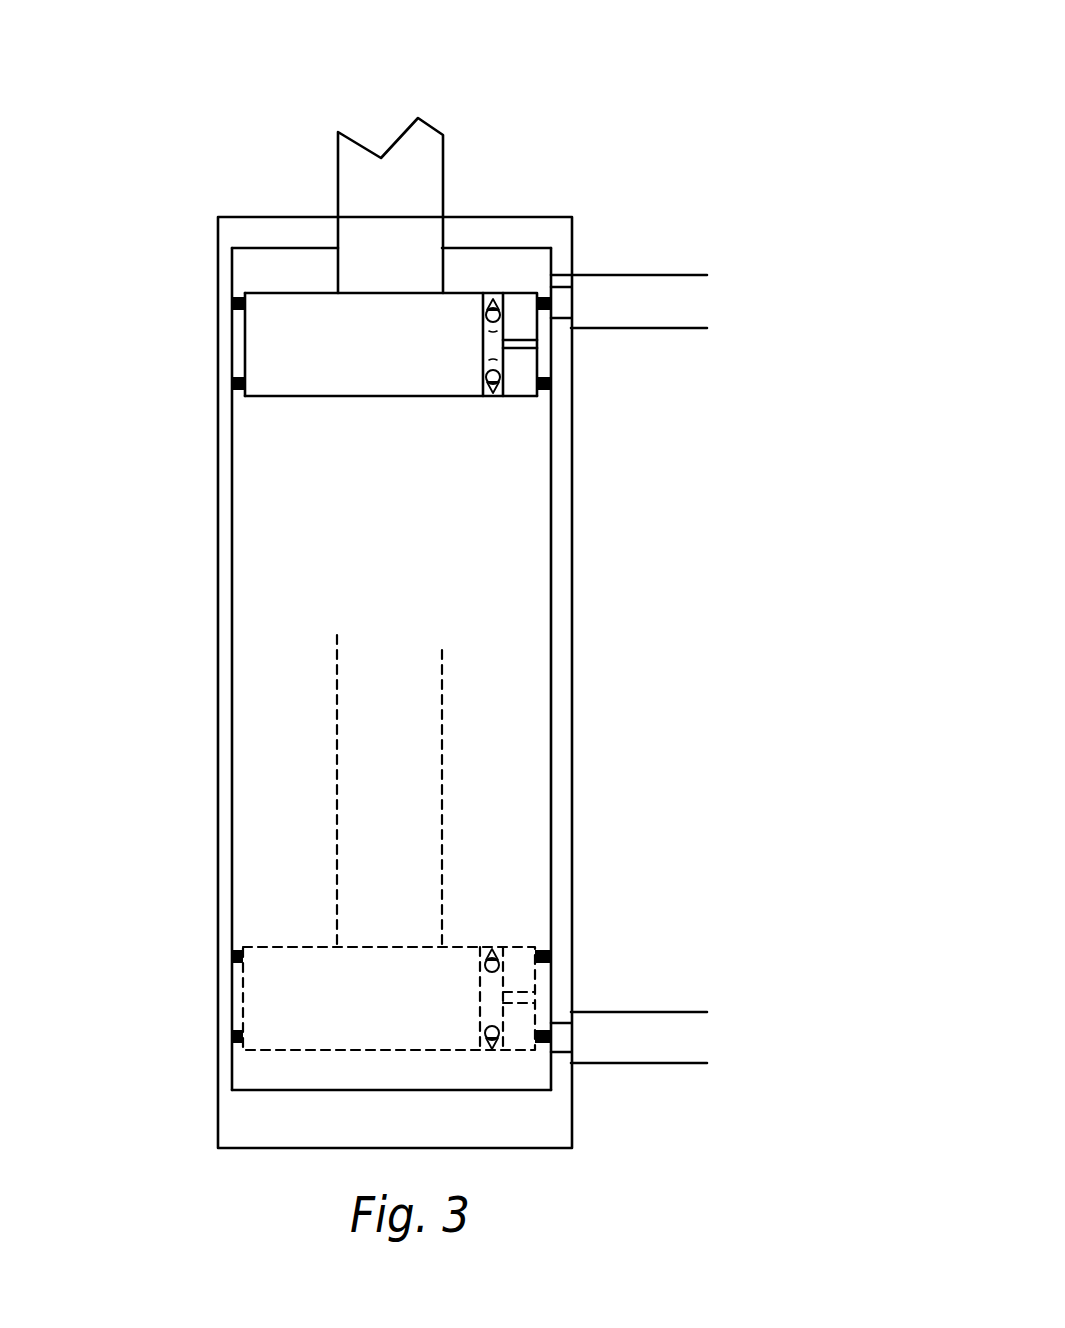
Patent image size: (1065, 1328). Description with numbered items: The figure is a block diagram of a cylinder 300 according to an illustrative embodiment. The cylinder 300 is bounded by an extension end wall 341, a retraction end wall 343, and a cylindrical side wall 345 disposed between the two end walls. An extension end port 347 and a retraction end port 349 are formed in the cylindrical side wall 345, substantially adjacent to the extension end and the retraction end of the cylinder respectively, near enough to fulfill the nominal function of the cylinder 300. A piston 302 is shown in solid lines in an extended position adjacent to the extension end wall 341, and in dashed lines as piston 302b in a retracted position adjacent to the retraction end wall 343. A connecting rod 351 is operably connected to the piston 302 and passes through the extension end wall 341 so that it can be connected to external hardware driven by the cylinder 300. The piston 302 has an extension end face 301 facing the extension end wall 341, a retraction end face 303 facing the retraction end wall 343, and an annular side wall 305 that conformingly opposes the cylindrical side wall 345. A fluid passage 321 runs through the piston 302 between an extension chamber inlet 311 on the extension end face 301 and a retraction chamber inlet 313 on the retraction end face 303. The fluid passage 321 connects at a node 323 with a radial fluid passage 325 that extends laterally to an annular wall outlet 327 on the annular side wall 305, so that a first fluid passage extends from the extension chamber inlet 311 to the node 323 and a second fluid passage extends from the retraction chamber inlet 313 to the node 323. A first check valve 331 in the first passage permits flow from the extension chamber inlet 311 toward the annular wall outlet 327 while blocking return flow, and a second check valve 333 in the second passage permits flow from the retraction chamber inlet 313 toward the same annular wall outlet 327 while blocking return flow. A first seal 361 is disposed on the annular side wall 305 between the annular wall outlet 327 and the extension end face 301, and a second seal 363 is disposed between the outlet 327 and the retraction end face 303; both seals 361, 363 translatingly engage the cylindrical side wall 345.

The cylinder 300 is at (742, 156).
The extension end face 301 is at (282, 328).
The piston 302 is at (250, 285).
The piston in retracted position 302b is at (255, 938).
The retraction end face 303 is at (287, 397).
The annular side wall 305 is at (262, 333).
The extension chamber inlet 311 is at (485, 296).
The retraction chamber inlet 313 is at (484, 398).
The fluid passage 321 is at (480, 322).
The node 323 is at (481, 343).
The radial fluid passage 325 is at (552, 374).
The annular wall outlet 327 is at (540, 334).
The first check valve 331 is at (498, 297).
The second check valve 333 is at (500, 398).
The extension end wall 341 is at (476, 247).
The retraction end wall 343 is at (462, 1092).
The cylindrical side wall 345 is at (551, 580).
The extension end port 347 is at (575, 302).
The retraction end port 349 is at (557, 1022).
The connecting rod 351 is at (337, 182).
The first seal 361 is at (232, 302).
The second seal 363 is at (232, 388).